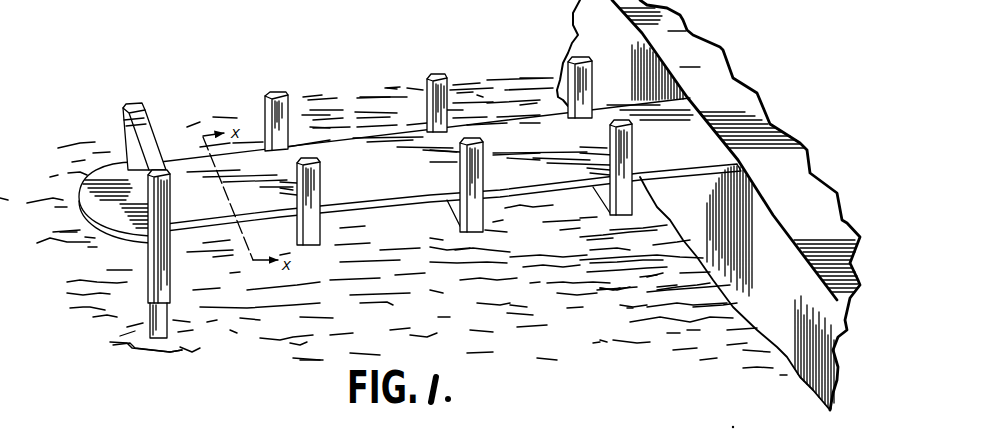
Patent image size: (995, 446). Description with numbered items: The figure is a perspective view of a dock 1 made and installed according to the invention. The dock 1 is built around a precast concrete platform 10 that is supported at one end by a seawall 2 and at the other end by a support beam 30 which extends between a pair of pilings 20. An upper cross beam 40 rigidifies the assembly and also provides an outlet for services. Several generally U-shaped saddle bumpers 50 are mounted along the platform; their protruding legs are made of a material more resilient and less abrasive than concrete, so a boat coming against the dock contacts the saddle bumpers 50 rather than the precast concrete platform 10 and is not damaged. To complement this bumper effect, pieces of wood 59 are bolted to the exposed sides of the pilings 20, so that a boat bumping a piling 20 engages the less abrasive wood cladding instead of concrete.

The dock 1 is at (367, 74).
The seawall 2 is at (708, 205).
The precast concrete platform 10 is at (552, 192).
The pilings 20 is at (141, 105).
The support beam 30 is at (142, 243).
The upper cross beam 40 is at (156, 146).
The saddle bumpers 50 is at (318, 189).
The pieces of wood 59 is at (171, 274).